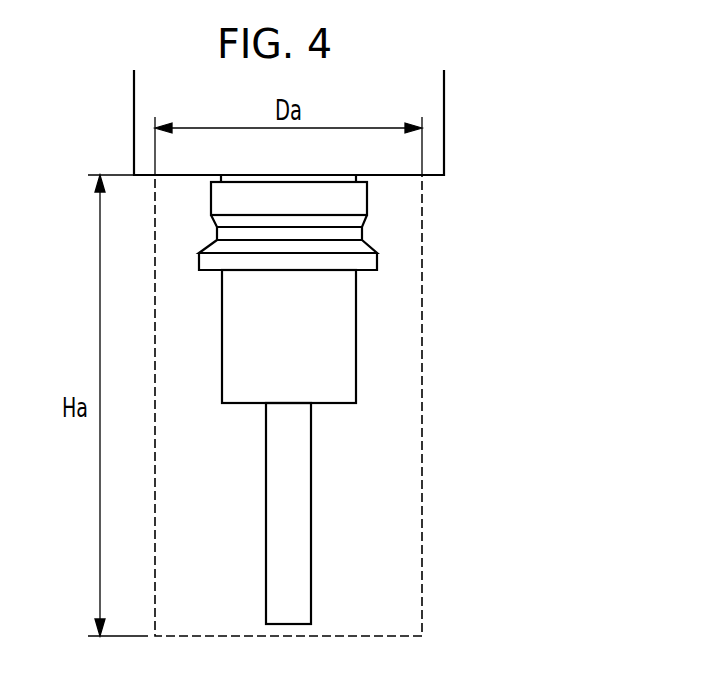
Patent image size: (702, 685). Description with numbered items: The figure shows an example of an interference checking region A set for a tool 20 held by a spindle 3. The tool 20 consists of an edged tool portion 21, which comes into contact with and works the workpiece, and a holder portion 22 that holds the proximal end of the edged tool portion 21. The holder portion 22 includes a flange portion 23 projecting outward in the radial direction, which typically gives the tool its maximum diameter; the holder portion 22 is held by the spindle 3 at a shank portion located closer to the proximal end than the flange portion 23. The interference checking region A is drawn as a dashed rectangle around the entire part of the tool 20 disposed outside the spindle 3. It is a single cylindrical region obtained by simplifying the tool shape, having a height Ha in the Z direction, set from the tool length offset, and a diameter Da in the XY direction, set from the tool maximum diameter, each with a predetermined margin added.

The spindle 3 is at (444, 123).
The tool 20 is at (347, 399).
The edged tool portion 21 is at (410, 445).
The holder portion 22 is at (372, 357).
The flange portion 23 is at (377, 260).
The interference checking region A is at (422, 577).